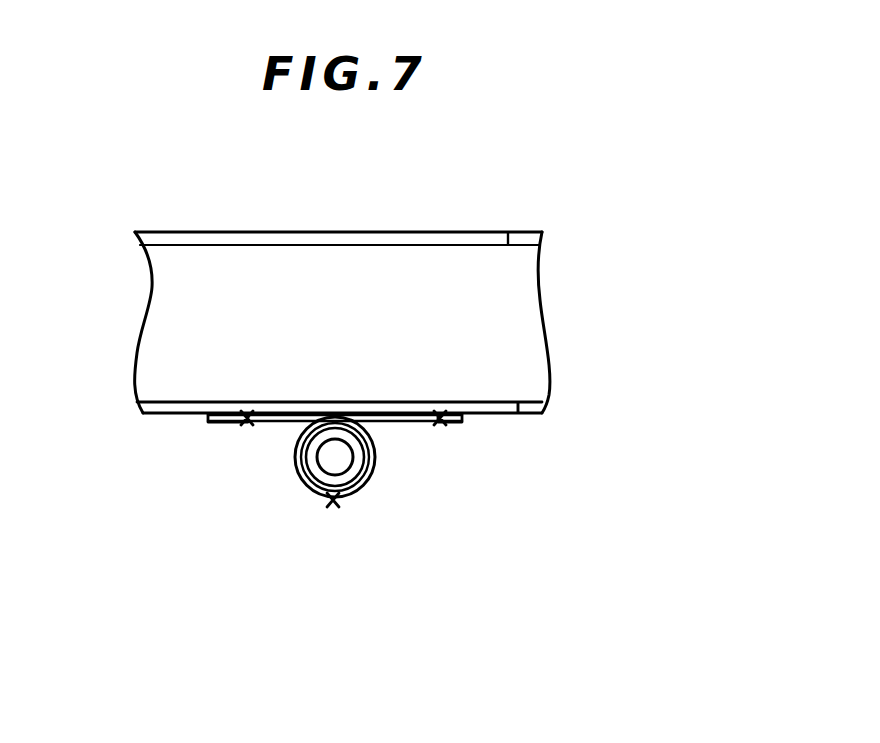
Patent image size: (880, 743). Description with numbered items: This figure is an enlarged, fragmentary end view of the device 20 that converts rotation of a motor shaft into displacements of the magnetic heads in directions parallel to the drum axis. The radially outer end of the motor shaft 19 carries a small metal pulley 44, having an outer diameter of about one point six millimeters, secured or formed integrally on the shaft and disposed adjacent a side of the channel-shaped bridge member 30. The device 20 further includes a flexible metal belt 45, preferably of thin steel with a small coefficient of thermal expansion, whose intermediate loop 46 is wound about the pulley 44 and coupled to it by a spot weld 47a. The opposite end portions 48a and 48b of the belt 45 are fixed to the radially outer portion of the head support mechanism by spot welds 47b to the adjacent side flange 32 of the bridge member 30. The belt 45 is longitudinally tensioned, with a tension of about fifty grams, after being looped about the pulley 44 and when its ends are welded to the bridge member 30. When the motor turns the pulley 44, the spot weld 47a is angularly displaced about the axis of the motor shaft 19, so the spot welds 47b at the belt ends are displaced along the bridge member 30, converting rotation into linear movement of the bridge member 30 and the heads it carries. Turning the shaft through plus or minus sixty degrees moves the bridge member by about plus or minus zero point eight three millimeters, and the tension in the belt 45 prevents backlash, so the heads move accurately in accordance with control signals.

The bridge member 30 is at (378, 229).
The side flange 32 is at (511, 232).
The flexible metal belt 45 is at (408, 428).
The end portion of the metal belt 48a is at (208, 419).
The end portion of the metal belt 48b is at (462, 421).
The spot weld 47b is at (244, 424).
The spot weld 47a is at (332, 503).
The device for converting rotation 20 is at (282, 505).
The intermediate loop 46 is at (348, 500).
The pulley 44 is at (310, 473).
The motor shaft 19 is at (325, 448).